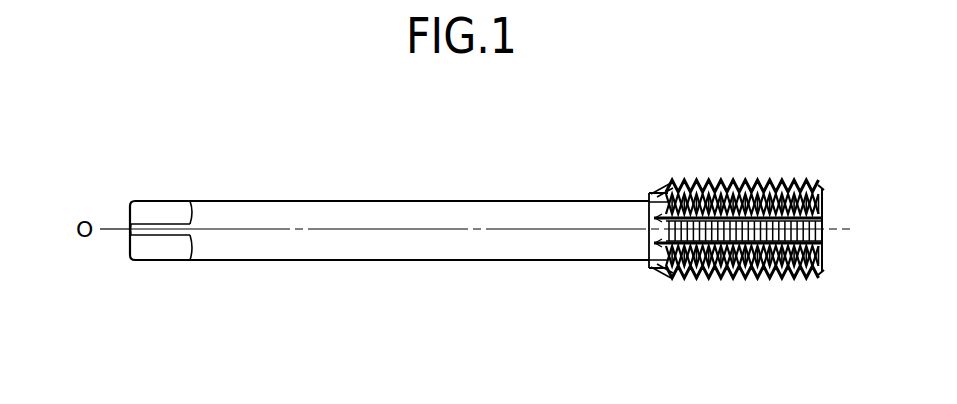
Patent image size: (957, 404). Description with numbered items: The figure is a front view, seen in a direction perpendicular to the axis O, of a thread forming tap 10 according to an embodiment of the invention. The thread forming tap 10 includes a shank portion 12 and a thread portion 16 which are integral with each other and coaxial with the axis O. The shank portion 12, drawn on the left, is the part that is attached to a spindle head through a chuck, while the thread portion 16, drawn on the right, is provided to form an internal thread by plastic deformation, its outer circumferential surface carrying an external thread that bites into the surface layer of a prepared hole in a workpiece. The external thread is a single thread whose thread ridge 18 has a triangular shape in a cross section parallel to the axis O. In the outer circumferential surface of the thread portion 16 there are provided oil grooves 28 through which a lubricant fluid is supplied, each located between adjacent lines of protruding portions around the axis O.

The thread forming tap 10 is at (292, 116).
The shank portion 12 is at (380, 212).
The thread portion 16 is at (692, 303).
The thread ridge 18 is at (808, 238).
The oil grooves 28 is at (750, 218).